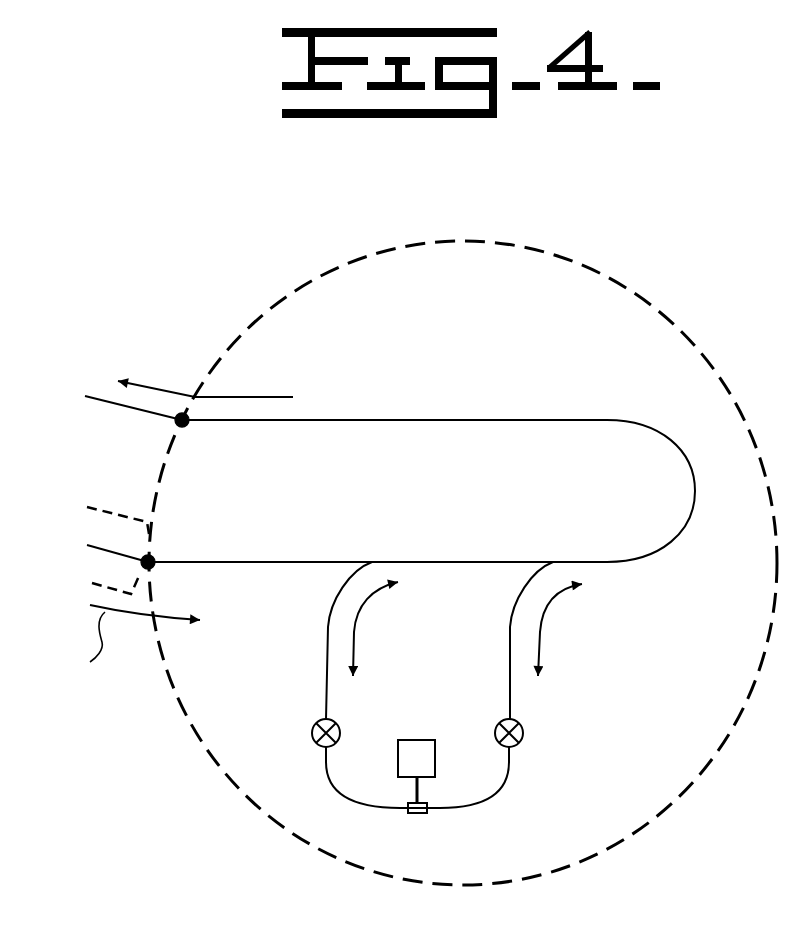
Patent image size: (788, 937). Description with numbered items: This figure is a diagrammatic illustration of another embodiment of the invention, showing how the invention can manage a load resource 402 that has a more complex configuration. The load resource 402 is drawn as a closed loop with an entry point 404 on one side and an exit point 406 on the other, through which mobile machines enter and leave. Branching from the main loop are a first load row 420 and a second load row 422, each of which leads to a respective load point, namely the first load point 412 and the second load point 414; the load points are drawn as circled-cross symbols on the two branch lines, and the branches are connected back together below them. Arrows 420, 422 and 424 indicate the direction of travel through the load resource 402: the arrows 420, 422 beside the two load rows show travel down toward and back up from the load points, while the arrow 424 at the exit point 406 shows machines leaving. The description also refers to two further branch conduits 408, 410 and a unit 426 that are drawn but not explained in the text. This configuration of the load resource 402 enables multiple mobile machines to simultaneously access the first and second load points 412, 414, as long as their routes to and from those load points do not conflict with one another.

The load resource 402 is at (602, 275).
The entry point 404 is at (152, 556).
The exit point 406 is at (189, 423).
The second branch conduit 408 is at (523, 588).
The first branch conduit 410 is at (335, 608).
The first load point 412 is at (523, 735).
The second load point 414 is at (312, 731).
The first load row 420 is at (366, 607).
The second load row 422 is at (548, 605).
The arrow 424 is at (153, 392).
The sensor/controller unit 426 is at (397, 752).